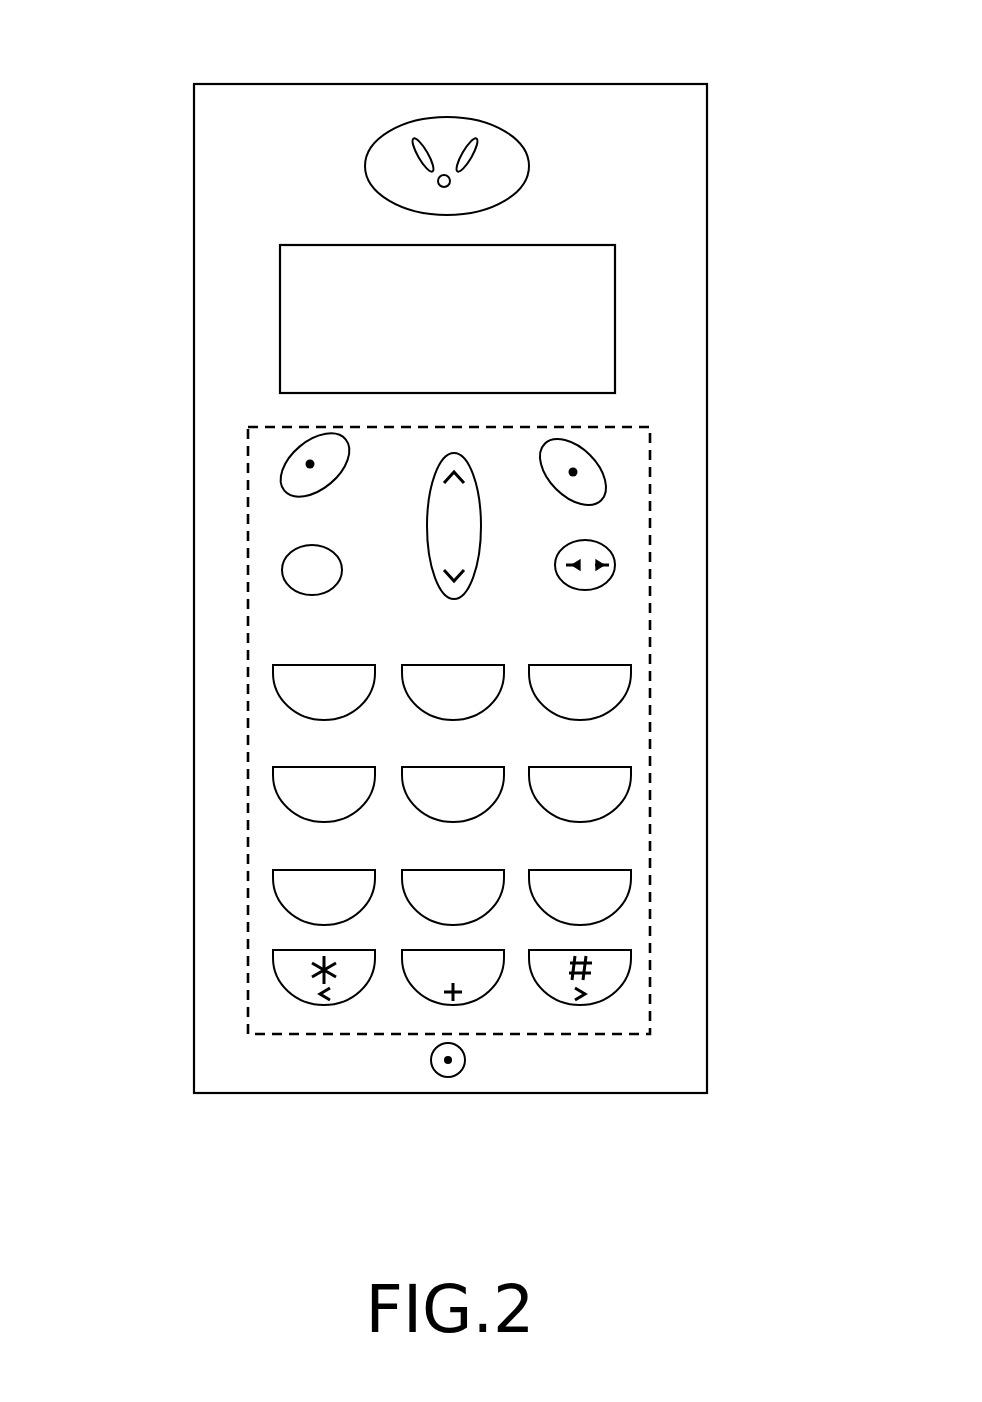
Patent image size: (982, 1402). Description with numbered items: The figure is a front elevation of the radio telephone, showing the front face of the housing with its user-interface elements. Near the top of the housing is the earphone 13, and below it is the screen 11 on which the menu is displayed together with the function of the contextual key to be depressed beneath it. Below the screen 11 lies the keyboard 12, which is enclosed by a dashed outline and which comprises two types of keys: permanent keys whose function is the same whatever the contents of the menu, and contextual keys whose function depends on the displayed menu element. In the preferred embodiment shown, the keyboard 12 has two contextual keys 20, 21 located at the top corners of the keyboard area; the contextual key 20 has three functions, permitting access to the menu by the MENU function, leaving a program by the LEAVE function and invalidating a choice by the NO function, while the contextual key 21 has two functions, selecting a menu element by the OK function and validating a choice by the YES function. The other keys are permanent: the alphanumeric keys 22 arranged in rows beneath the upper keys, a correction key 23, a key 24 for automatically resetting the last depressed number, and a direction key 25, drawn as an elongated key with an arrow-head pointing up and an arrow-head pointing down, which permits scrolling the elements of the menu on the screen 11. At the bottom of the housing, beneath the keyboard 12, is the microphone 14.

The screen 11 is at (592, 348).
The keyboard 12 is at (248, 805).
The earphone 13 is at (448, 128).
The microphone 14 is at (450, 1077).
The contextual key 20 is at (290, 460).
The contextual key 21 is at (597, 462).
The alphanumeric keys 22 is at (689, 634).
The correction key 23 is at (283, 570).
The key for automatically resetting the last depressed number 24 is at (618, 560).
The direction key 25 is at (448, 452).